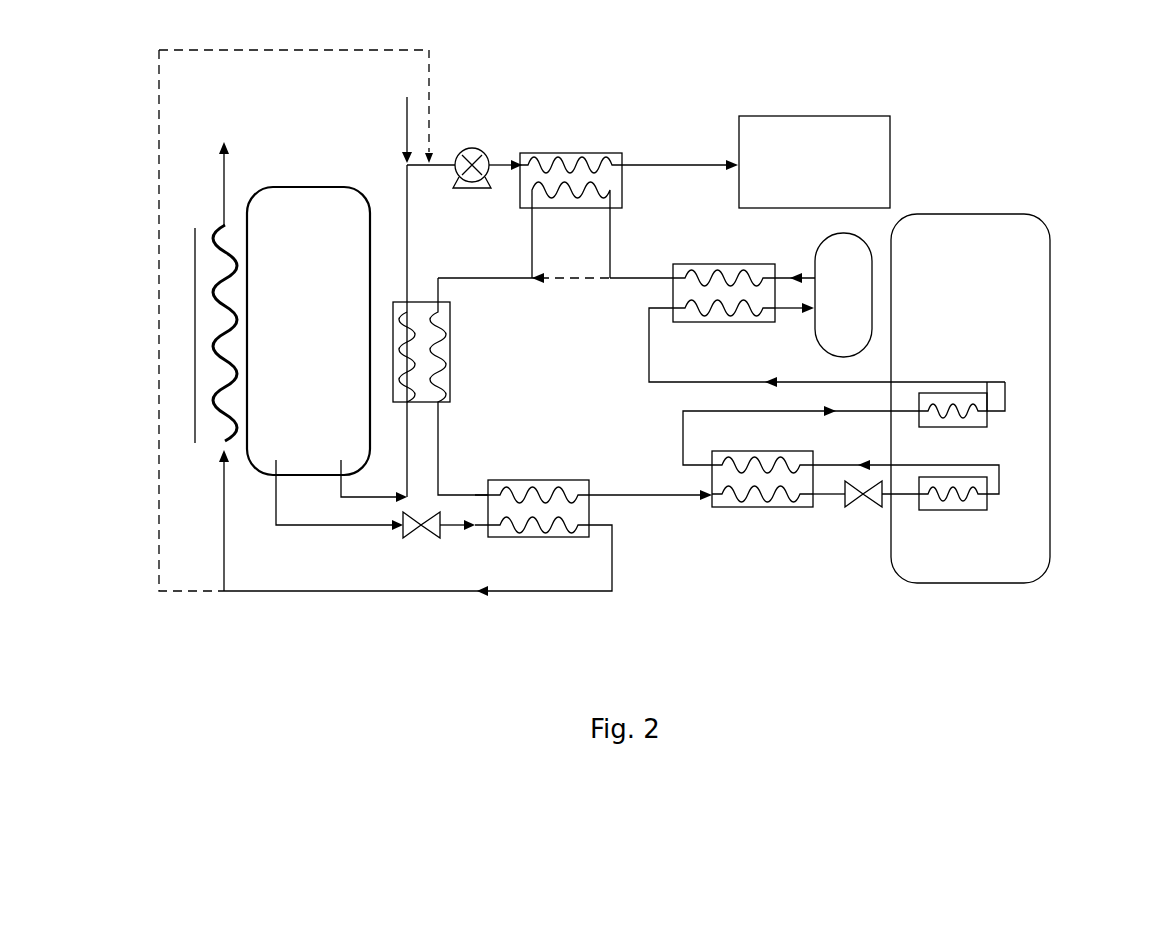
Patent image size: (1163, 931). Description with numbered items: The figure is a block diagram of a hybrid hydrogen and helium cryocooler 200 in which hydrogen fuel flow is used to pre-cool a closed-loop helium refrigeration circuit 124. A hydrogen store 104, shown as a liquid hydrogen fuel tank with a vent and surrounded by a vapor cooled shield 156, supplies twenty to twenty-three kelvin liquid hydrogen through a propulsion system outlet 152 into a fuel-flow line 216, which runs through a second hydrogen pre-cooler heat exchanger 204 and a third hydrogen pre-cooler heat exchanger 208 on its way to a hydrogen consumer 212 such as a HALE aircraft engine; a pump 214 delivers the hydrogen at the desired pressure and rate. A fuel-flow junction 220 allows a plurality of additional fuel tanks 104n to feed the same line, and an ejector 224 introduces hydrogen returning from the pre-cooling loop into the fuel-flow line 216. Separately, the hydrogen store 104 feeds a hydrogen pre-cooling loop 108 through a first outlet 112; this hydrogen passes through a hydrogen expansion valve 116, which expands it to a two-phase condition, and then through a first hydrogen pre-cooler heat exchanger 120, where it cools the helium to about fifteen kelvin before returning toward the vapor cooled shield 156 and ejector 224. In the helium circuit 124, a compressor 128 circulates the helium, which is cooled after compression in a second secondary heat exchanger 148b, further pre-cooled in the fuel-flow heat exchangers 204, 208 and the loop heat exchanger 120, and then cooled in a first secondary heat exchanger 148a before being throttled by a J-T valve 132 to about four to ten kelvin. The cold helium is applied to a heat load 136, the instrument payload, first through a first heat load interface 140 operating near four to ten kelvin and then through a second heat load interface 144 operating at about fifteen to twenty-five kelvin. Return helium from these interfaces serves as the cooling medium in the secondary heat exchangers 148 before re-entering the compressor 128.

The hybrid hydrogen and helium cryocooler 200 is at (712, 67).
The hydrogen store 104 is at (275, 187).
The plurality of LH2 fuel tanks 104n is at (407, 125).
The hydrogen pre-cooling loop 108 is at (432, 622).
The first outlet 112 is at (352, 528).
The hydrogen expansion valve 116 is at (440, 530).
The first hydrogen pre-cooler heat exchanger 120 is at (537, 480).
The closed-loop helium refrigeration circuit 124 is at (760, 640).
The compressor 128 is at (815, 340).
The J-T valve 132 is at (848, 512).
The heat load 136 is at (968, 214).
The first heat load interface 140 is at (987, 511).
The second heat load interface 144 is at (987, 419).
The secondary heat exchangers 148 is at (685, 264).
The first secondary heat exchanger 148a is at (790, 510).
The second secondary heat exchanger 148b is at (735, 264).
The propulsion system outlet 152 is at (341, 490).
The vapor cooled shield 156 is at (195, 327).
The second hydrogen pre-cooler heat exchanger 204 is at (450, 340).
The third hydrogen pre-cooler heat exchanger 208 is at (570, 153).
The hydrogen consumer 212 is at (830, 116).
The pump 214 is at (476, 148).
The fuel-flow line 216 is at (407, 198).
The fuel-flow junction 220 is at (407, 128).
The ejector 224 is at (429, 165).